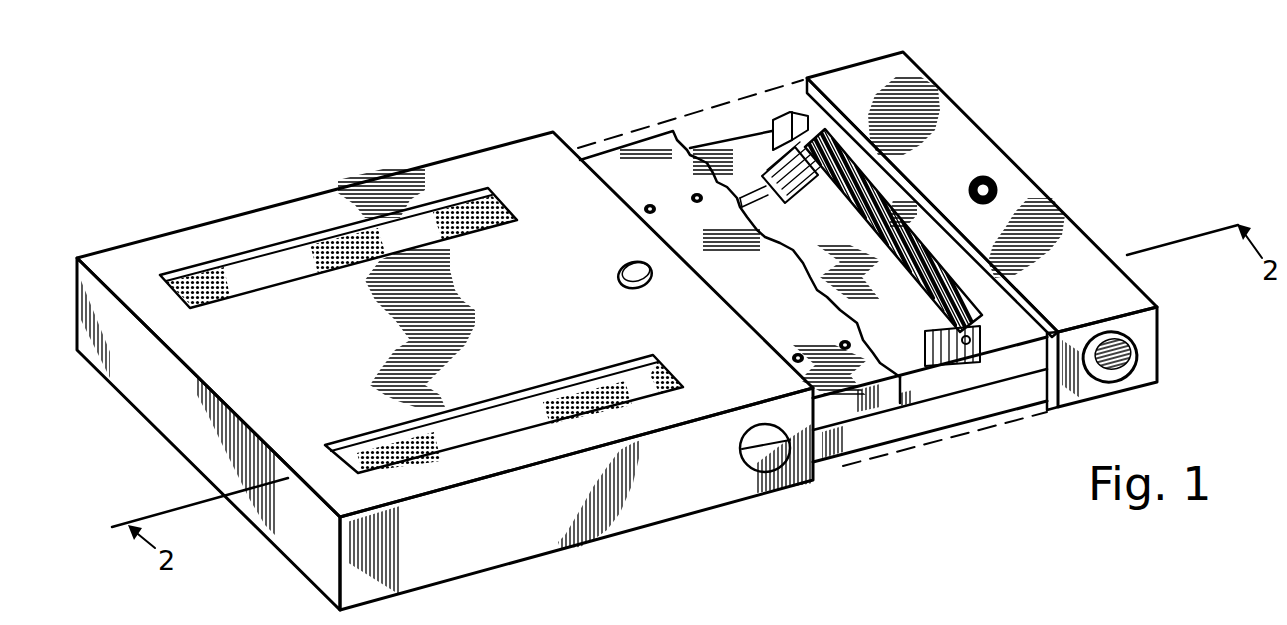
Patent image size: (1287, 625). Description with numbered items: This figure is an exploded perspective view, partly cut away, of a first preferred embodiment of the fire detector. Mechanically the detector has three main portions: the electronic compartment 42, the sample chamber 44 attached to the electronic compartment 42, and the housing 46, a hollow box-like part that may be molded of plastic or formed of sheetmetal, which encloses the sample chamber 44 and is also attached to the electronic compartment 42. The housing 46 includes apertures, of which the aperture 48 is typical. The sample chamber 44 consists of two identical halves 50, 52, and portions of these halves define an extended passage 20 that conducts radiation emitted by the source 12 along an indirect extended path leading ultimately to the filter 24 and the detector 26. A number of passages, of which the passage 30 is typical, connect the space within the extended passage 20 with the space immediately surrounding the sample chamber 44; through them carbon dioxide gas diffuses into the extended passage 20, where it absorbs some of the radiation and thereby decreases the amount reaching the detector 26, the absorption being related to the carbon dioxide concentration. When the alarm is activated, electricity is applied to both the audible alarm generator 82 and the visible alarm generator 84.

The source 12 is at (978, 350).
The extended passage 20 is at (935, 365).
The filter 24 is at (737, 198).
The detector 26 is at (757, 170).
The passage 30 is at (650, 205).
The electronic compartment 42 is at (1078, 220).
The sample chamber 44 is at (586, 145).
The housing 46 is at (157, 236).
The aperture 48 is at (330, 432).
The half 50 is at (850, 410).
The half 52 is at (893, 382).
The audible alarm generator 82 is at (1130, 352).
The visible alarm generator 84 is at (985, 183).